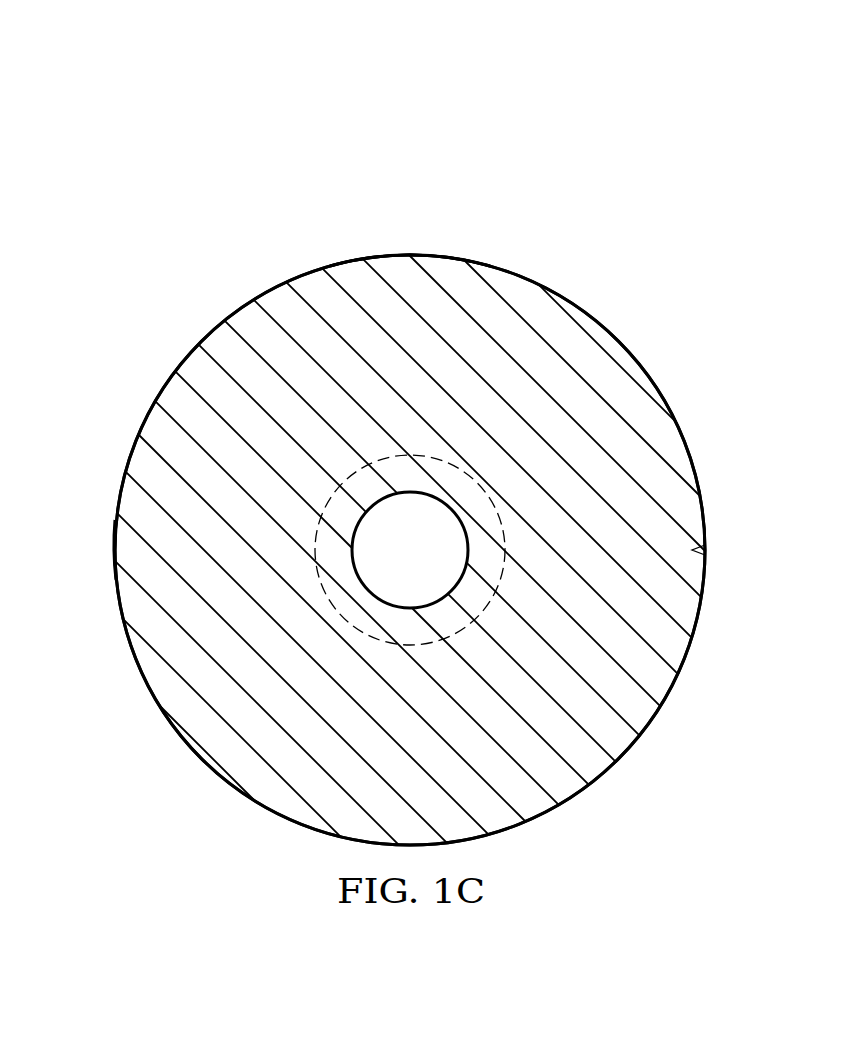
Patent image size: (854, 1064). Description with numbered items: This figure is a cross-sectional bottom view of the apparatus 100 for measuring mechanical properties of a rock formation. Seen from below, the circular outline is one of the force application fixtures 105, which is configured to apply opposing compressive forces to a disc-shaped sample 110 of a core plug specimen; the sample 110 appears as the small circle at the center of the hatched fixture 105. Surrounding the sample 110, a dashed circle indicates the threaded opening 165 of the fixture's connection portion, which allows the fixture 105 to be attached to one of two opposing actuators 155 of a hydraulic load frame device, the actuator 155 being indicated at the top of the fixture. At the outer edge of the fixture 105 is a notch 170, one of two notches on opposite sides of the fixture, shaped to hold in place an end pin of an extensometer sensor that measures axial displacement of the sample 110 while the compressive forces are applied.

The apparatus 100 is at (98, 78).
The force application fixture 105 is at (171, 213).
The disc-shaped sample 110 is at (451, 506).
The actuator 155 is at (410, 262).
The threaded opening 165 is at (380, 642).
The notch 170 is at (128, 546).